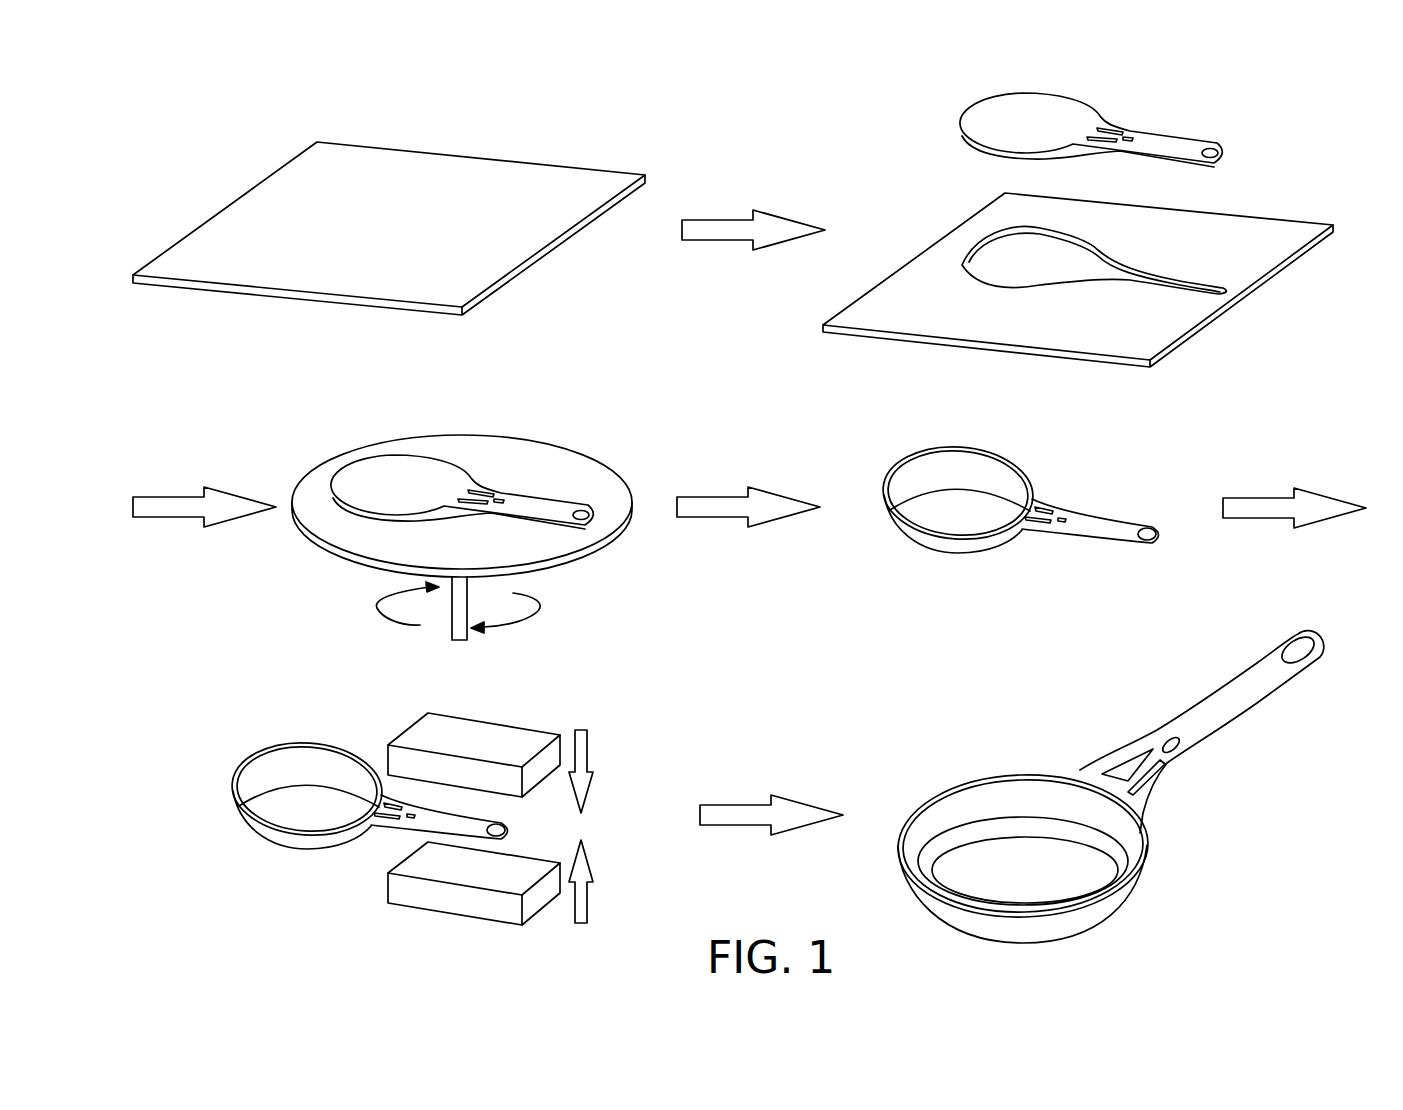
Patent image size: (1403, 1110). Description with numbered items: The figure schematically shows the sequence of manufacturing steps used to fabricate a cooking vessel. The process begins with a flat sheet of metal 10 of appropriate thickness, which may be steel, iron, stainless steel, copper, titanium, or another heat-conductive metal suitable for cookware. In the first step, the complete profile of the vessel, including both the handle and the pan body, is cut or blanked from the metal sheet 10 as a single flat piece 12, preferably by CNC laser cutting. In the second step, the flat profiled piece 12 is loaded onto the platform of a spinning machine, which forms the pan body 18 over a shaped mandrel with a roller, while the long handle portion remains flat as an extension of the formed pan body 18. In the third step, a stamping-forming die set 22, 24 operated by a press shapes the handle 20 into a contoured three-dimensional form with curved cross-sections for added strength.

The sheet of metal 10 is at (477, 180).
The single flat piece 12 is at (1050, 115).
The pan body 18 is at (776, 707).
The handle 20 is at (1258, 675).
The stamping-forming die 22 is at (503, 743).
The stamping-forming die 24 is at (480, 907).